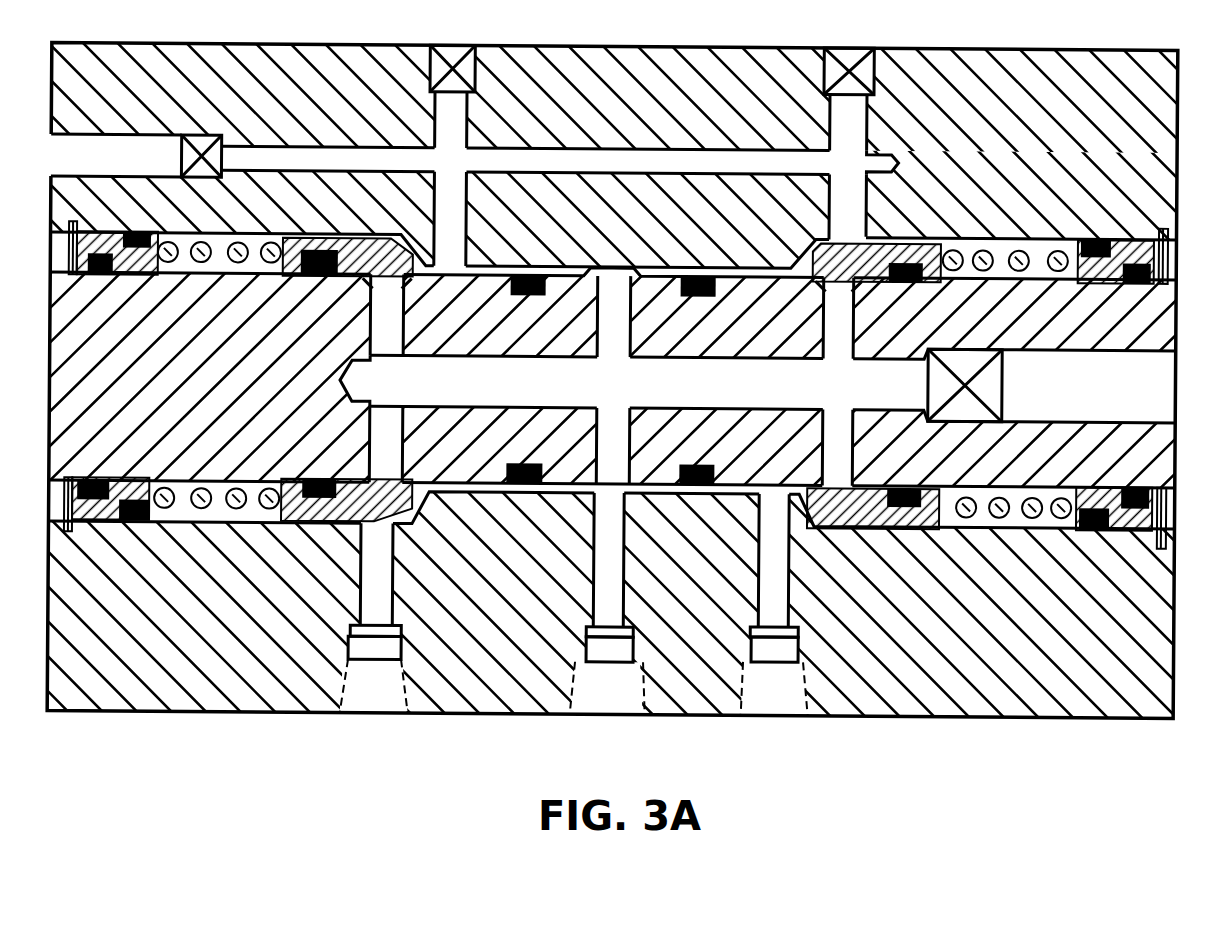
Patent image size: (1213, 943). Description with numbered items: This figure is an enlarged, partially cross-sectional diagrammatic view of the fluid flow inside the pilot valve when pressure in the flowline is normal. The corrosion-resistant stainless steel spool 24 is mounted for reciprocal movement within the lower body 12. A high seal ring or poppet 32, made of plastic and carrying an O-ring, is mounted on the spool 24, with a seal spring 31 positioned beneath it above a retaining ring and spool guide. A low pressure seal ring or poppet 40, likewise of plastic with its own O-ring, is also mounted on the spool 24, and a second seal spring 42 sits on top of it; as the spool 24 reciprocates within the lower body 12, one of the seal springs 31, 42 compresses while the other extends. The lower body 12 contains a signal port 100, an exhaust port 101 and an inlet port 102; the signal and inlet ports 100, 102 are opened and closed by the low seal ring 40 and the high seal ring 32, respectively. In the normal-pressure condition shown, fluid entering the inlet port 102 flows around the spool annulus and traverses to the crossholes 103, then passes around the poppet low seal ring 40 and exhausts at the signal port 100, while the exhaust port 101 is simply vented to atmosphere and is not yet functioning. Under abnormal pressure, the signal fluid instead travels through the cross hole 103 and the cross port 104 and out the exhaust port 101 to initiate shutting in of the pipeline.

The lower body 12 is at (606, 384).
The spool 24 is at (752, 321).
The seal spring 31 is at (212, 503).
The high seal ring 32 is at (288, 521).
The low pressure seal ring 40 is at (813, 517).
The second seal spring 42 is at (1040, 517).
The signal port 100 is at (800, 694).
The exhaust port 101 is at (637, 693).
The inlet port 102 is at (412, 692).
The crossholes 103 is at (758, 405).
The cross port 104 is at (742, 273).